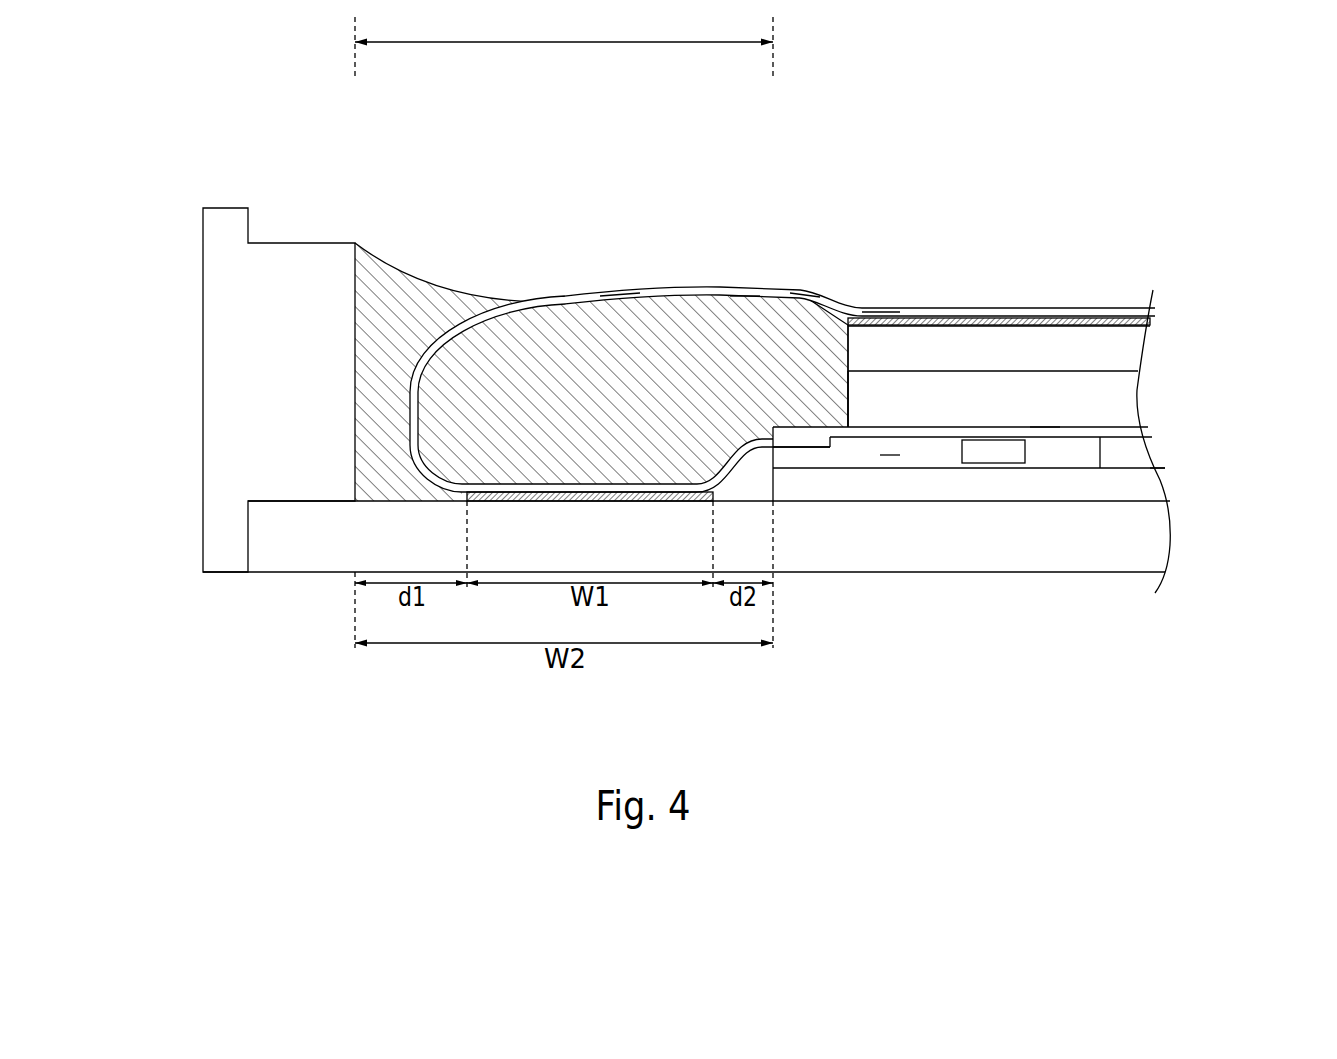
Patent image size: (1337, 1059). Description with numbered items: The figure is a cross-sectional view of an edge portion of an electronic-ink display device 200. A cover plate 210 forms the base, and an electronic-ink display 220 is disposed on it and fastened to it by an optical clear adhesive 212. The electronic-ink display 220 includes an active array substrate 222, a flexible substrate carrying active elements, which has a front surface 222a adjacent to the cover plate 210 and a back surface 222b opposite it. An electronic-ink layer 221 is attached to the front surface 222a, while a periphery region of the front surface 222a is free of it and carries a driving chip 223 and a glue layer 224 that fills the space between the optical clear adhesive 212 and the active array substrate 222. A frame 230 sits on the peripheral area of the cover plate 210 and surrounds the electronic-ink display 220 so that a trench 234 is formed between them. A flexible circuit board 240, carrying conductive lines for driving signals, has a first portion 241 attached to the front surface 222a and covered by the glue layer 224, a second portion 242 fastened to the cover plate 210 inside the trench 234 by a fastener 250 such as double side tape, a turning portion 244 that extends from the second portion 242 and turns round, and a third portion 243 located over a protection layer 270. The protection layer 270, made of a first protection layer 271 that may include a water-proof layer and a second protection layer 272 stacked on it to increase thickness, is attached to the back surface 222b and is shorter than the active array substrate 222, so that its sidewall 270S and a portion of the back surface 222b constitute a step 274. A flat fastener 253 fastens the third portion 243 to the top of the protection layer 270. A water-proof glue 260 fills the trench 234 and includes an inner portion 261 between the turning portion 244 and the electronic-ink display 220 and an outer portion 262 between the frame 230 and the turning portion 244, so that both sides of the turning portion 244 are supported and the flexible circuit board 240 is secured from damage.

The electronic-ink display device 200 is at (131, 151).
The cover plate 210 is at (933, 550).
The optical clear adhesive 212 is at (1165, 488).
The electronic-ink display 220 is at (1041, 445).
The electronic-ink layer 221 is at (1155, 452).
The active array substrate 222 is at (1150, 431).
The front surface 222a is at (1060, 440).
The back surface 222b is at (1047, 426).
The driving chip 223 is at (990, 455).
The glue layer 224 is at (878, 453).
The frame 230 is at (218, 358).
The trench 234 is at (564, 48).
The flexible circuit board 240 is at (658, 212).
The first portion 241 is at (813, 306).
The second portion 242 is at (743, 306).
The third portion 243 is at (873, 308).
The turning portion 244 is at (604, 296).
The fastener 250 is at (573, 501).
The flat fastener 253 is at (988, 318).
The water-proof glue 260 is at (601, 335).
The inner portion 261 is at (462, 223).
The outer portion 262 is at (490, 297).
The protection layer 270 is at (1079, 337).
The sidewall 270S is at (850, 403).
The first protection layer 271 is at (1128, 386).
The second protection layer 272 is at (1130, 354).
The step 274 is at (818, 414).